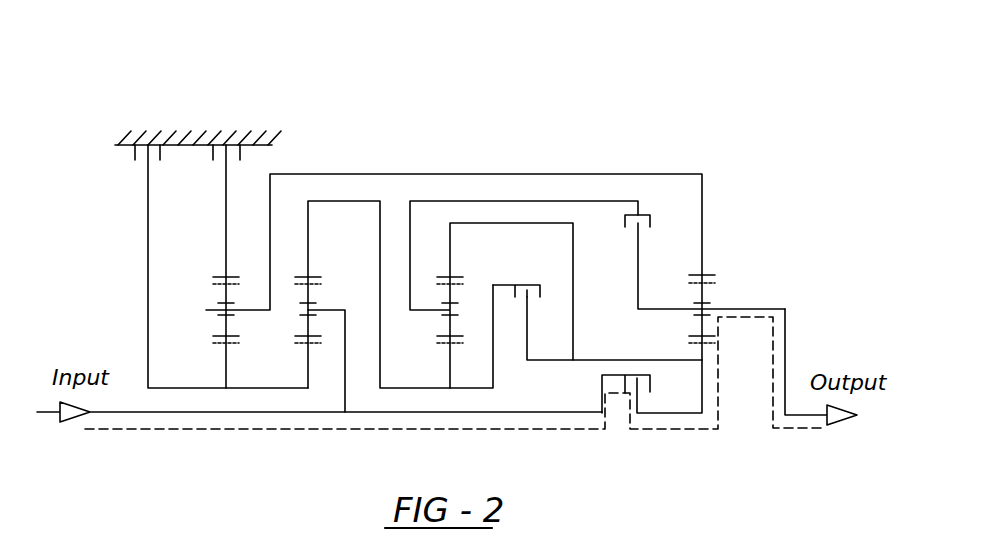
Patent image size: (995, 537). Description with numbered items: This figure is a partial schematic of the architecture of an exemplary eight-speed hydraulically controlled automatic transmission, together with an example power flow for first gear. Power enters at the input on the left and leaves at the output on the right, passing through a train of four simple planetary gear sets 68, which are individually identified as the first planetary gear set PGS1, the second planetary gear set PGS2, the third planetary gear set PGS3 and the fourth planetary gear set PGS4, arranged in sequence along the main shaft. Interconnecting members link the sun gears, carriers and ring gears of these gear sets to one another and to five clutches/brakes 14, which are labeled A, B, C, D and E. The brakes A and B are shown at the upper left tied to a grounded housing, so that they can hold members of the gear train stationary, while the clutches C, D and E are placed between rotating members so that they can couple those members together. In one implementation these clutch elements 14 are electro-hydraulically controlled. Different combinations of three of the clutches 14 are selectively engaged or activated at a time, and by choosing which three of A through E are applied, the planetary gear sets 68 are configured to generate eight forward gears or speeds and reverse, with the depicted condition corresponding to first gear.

The clutch element 14 is at (423, 247).
The simple planetary gear set 68 is at (490, 291).
The first planetary gear set PGS1 is at (199, 310).
The second planetary gear set PGS2 is at (333, 297).
The third planetary gear set PGS3 is at (426, 326).
The fourth planetary gear set PGS4 is at (734, 301).
The clutch/brake A is at (147, 127).
The clutch/brake B is at (226, 127).
The clutch/brake C is at (638, 394).
The clutch/brake D is at (650, 219).
The clutch/brake E is at (516, 271).